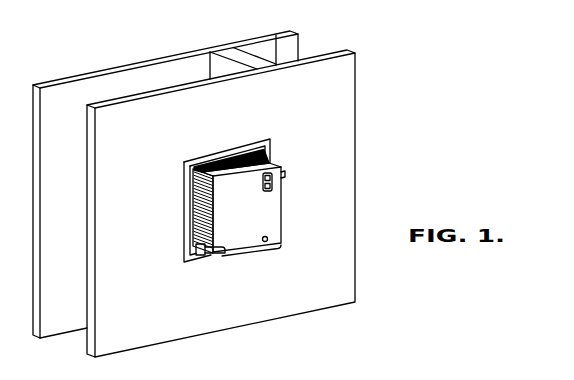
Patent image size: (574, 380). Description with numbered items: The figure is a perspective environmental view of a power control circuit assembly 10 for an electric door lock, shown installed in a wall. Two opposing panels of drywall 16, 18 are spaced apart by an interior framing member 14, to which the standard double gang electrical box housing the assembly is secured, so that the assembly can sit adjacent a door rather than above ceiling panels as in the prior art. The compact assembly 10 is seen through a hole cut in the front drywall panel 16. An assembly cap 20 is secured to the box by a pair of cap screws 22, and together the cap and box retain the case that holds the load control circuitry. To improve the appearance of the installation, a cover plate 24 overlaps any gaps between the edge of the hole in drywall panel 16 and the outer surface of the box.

The power control circuit assembly 10 is at (242, 206).
The interior framing member 14 is at (232, 49).
The drywall panel 16 is at (354, 118).
The drywall panel 18 is at (122, 66).
The assembly cap 20 is at (282, 217).
The cap screws 22 is at (199, 257).
The cover plate 24 is at (192, 158).